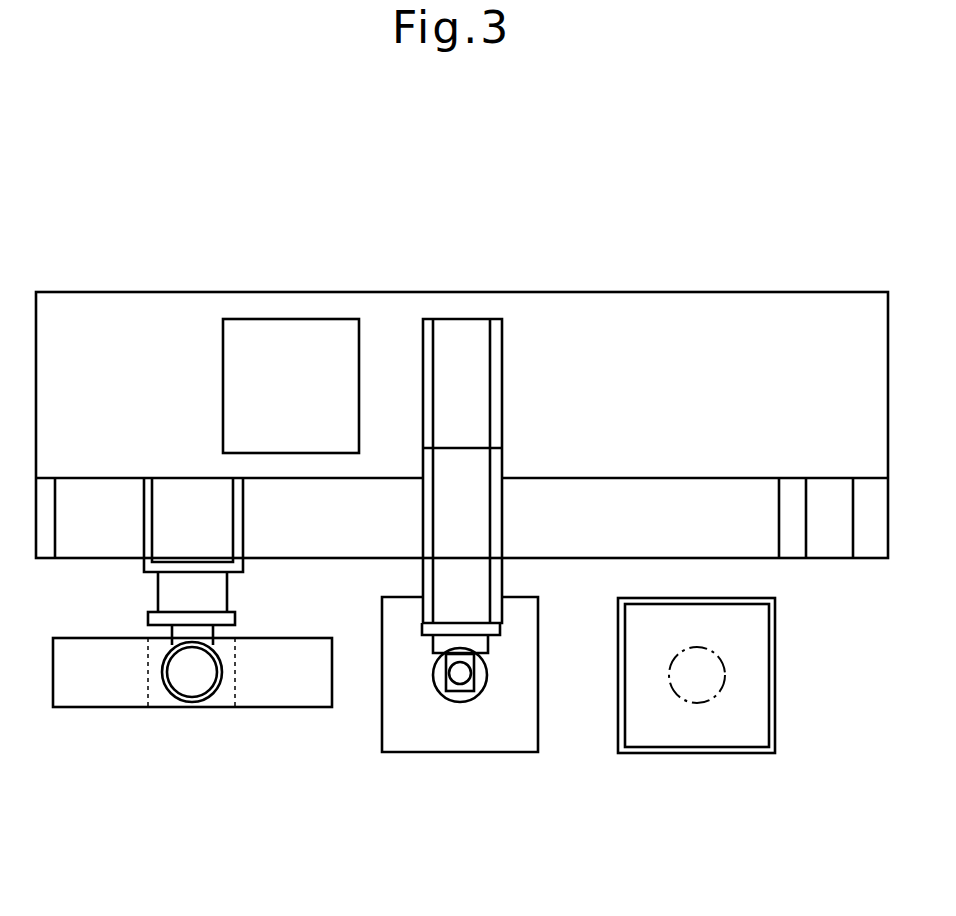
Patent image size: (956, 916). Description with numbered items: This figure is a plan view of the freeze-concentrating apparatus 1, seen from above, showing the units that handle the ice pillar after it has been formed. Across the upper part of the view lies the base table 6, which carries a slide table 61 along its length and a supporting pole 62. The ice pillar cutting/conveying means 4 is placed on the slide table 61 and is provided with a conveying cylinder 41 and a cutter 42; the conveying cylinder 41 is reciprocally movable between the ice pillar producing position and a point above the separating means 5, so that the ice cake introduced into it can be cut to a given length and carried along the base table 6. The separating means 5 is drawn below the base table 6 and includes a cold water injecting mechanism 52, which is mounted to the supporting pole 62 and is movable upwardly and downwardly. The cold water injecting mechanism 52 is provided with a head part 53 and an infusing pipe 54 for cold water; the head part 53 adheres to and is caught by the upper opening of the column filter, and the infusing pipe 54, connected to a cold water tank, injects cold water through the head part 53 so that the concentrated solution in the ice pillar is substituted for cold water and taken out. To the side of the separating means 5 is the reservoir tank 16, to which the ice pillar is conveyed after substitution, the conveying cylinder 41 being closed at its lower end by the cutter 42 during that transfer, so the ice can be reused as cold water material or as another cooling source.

The freeze-concentrating apparatus 1 is at (162, 171).
The ice pillar cutting/conveying means 4 is at (138, 608).
The separating means 5 is at (378, 748).
The base table 6 is at (722, 290).
The reservoir tank 16 is at (776, 675).
The conveying cylinder 41 is at (170, 707).
The cutter 42 is at (101, 708).
The cold water injecting mechanism 52 is at (503, 660).
The head part 53 is at (460, 701).
The infusing pipe 54 is at (462, 675).
The slide table 61 is at (651, 478).
The supporting pole 62 is at (503, 342).